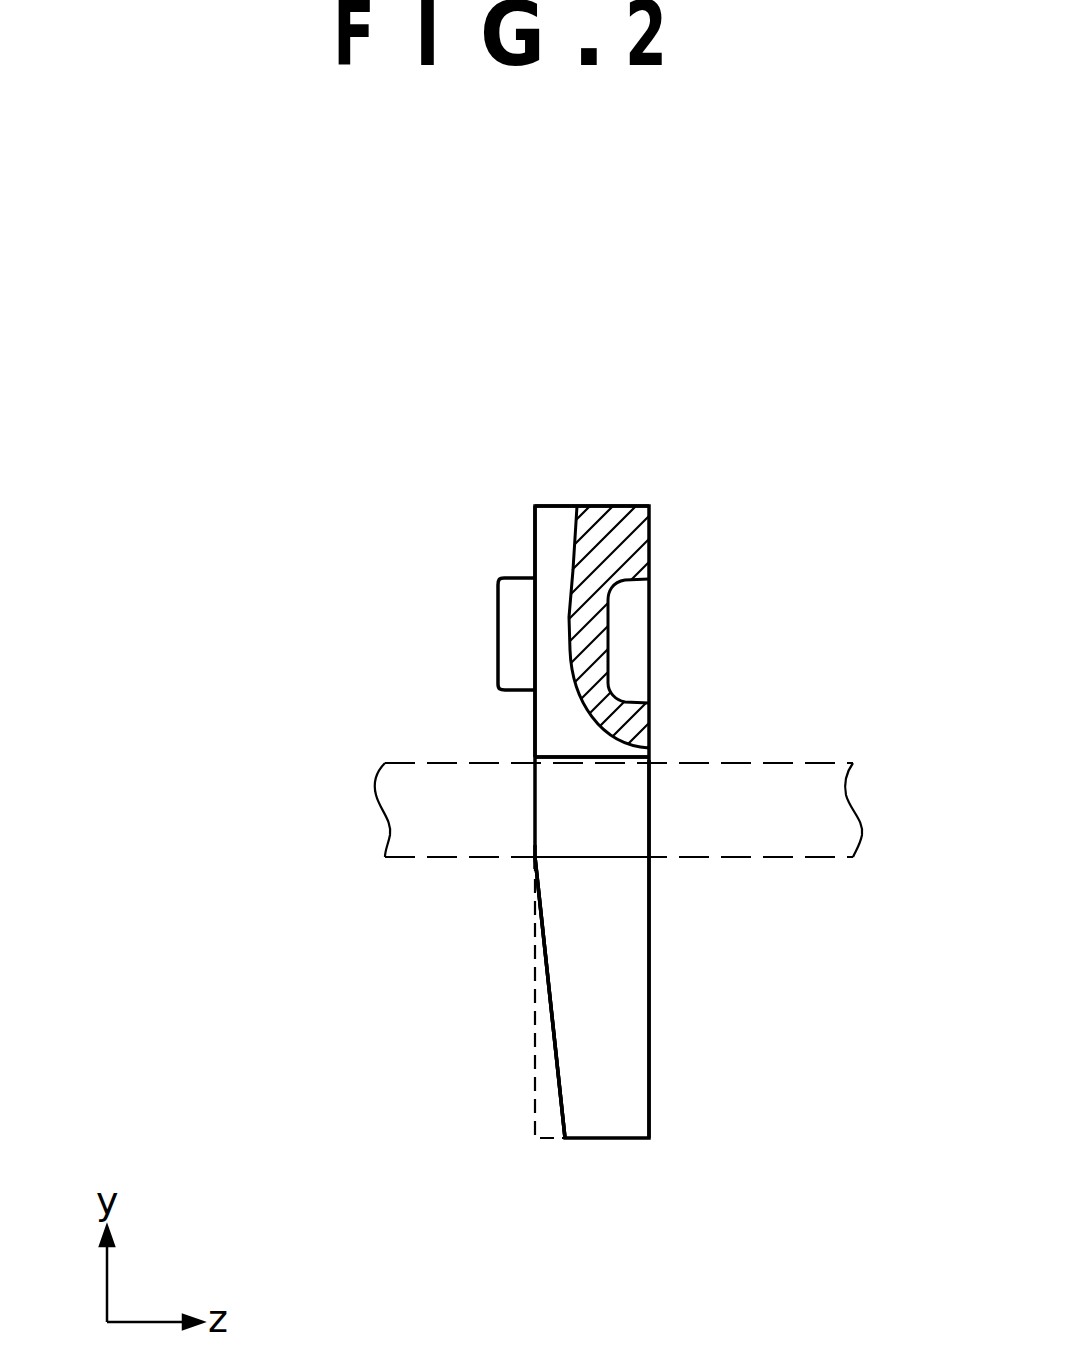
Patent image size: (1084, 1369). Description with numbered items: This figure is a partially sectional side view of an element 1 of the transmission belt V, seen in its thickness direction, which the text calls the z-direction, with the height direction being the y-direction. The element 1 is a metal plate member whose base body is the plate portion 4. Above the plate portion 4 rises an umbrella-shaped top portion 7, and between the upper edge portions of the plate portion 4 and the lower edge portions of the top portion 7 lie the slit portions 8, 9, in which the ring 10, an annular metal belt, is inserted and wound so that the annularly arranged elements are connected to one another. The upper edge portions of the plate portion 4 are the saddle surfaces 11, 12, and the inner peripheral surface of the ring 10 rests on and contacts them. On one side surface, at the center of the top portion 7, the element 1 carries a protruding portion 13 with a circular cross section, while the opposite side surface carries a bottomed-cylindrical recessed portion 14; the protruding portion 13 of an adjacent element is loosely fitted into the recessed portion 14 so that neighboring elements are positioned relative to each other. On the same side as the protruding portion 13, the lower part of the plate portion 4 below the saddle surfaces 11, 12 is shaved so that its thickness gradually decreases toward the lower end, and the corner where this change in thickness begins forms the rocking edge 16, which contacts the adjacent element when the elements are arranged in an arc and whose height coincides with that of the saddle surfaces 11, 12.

The element 1 is at (690, 467).
The plate portion 4 is at (649, 905).
The top portion 7 is at (537, 505).
The slit portion 8 is at (570, 760).
The slit portion 9 is at (523, 729).
The ring 10 is at (808, 845).
The saddle surface 11 is at (573, 857).
The saddle surface 12 is at (533, 984).
The protruding portion 13 is at (498, 580).
The recessed portion 14 is at (650, 600).
The rocking edge 16 is at (535, 857).
The transmission belt V is at (883, 490).